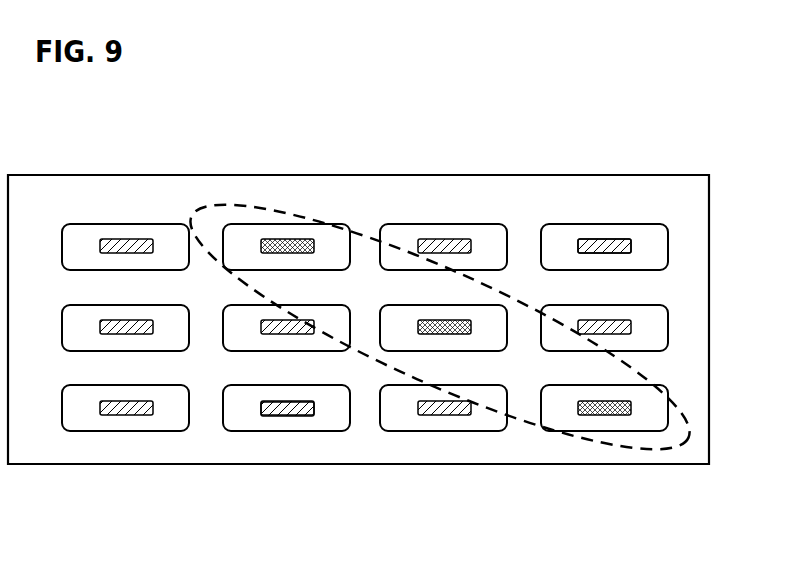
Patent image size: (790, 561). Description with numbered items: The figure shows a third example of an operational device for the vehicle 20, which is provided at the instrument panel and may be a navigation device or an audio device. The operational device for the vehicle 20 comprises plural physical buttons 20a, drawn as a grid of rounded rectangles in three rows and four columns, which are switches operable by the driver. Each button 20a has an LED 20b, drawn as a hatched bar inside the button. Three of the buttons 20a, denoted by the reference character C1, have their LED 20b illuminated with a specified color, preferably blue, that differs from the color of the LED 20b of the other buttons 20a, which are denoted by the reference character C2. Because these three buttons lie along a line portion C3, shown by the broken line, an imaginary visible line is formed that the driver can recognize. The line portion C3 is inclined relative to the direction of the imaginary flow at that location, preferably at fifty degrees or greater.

The operational device for the vehicle 20 is at (337, 175).
The button 20a is at (641, 224).
The LED 20b is at (597, 240).
The reference character denoting three buttons illuminated with the specified color C1 is at (287, 240).
The reference character denoting the other buttons C2 is at (126, 239).
The line portion C3 is at (522, 414).